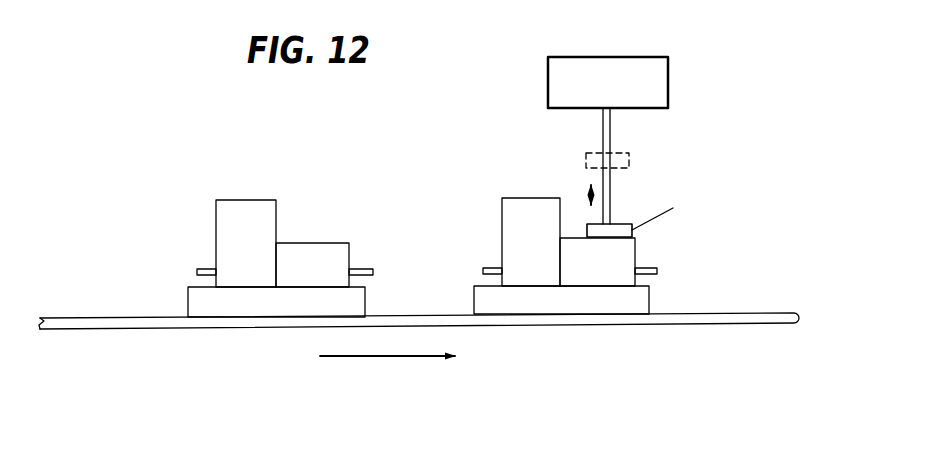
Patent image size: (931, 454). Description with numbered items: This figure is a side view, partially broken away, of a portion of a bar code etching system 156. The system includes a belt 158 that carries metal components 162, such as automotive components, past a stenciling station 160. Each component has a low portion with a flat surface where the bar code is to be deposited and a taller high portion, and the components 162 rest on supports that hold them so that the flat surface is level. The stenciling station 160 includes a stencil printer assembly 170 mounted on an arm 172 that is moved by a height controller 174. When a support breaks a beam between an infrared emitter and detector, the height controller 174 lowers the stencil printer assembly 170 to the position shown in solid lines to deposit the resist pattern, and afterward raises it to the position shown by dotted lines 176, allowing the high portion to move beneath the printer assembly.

The bar code etching system 156 is at (198, 192).
The belt 158 is at (110, 323).
The stenciling station 160 is at (716, 89).
The metal components 162 is at (351, 221).
The stencil printer assembly 170 is at (615, 230).
The arm 172 is at (603, 127).
The height controller 174 is at (652, 65).
The dotted lines 176 is at (630, 155).